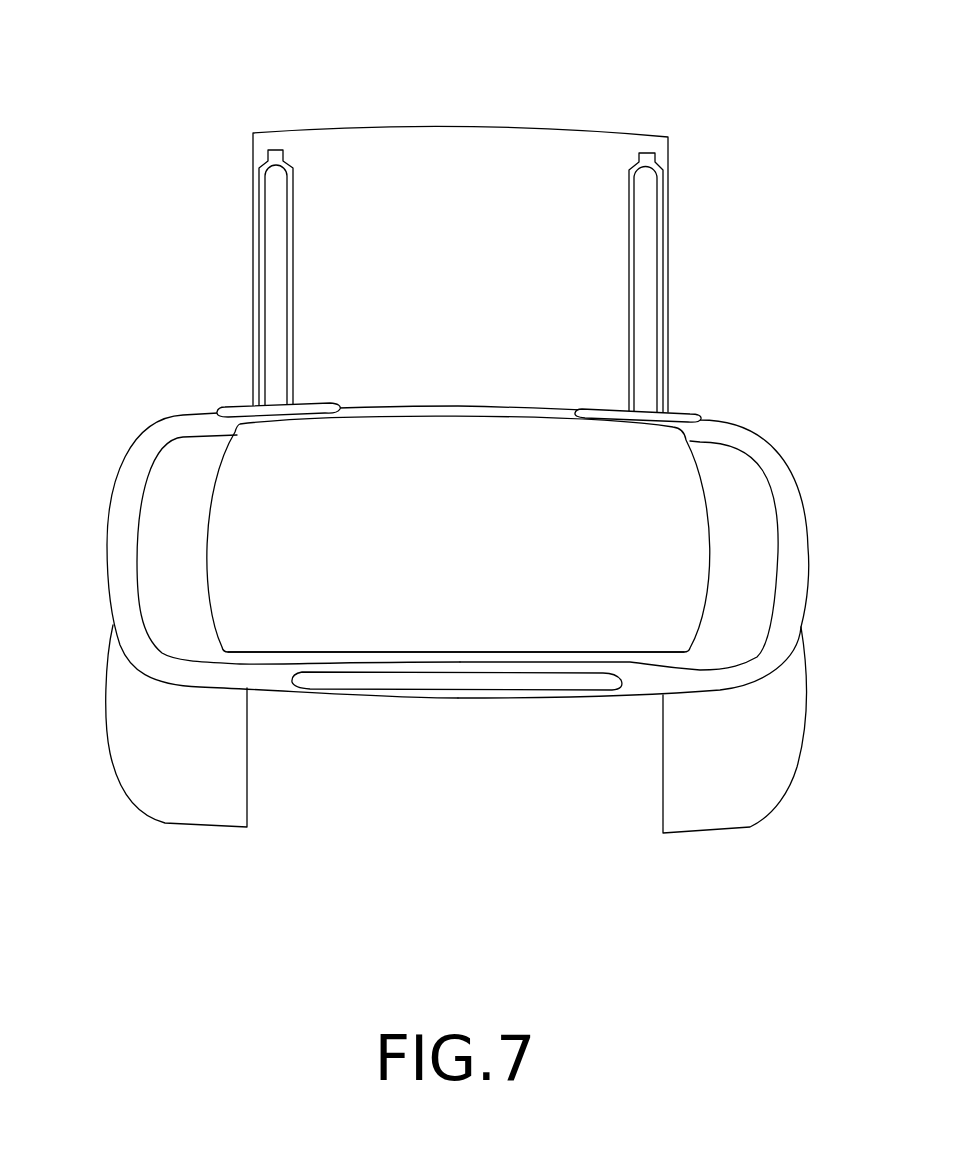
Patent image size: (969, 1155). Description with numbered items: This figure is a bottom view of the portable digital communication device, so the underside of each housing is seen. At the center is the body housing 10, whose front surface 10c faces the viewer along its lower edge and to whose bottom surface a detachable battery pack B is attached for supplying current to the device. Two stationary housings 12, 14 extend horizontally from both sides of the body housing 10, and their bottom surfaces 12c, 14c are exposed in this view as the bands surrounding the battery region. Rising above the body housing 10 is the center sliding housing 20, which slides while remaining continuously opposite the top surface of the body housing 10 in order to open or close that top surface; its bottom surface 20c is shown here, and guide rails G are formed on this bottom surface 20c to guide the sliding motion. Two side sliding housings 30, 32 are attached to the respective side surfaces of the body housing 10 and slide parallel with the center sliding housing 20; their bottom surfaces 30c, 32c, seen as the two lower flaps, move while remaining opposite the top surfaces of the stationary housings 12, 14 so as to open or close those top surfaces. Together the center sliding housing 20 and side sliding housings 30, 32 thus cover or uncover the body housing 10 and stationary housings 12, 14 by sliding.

The body housing 10 is at (458, 600).
The front surface 10c is at (363, 635).
The battery pack B is at (550, 632).
The first stationary housing 12 is at (241, 555).
The bottom surface of first stationary housing 12c is at (167, 482).
The second stationary housing 14 is at (556, 552).
The bottom surface of second stationary housing 14c is at (740, 485).
The center sliding housing 20 is at (456, 221).
The bottom surface of center sliding housing 20c is at (458, 145).
The guide grips G is at (270, 317).
The first side sliding housing 30 is at (135, 776).
The bottom surface of first side sliding housing 30c is at (180, 807).
The second side sliding housing 32 is at (779, 783).
The bottom surface of second side sliding housing 32c is at (718, 818).